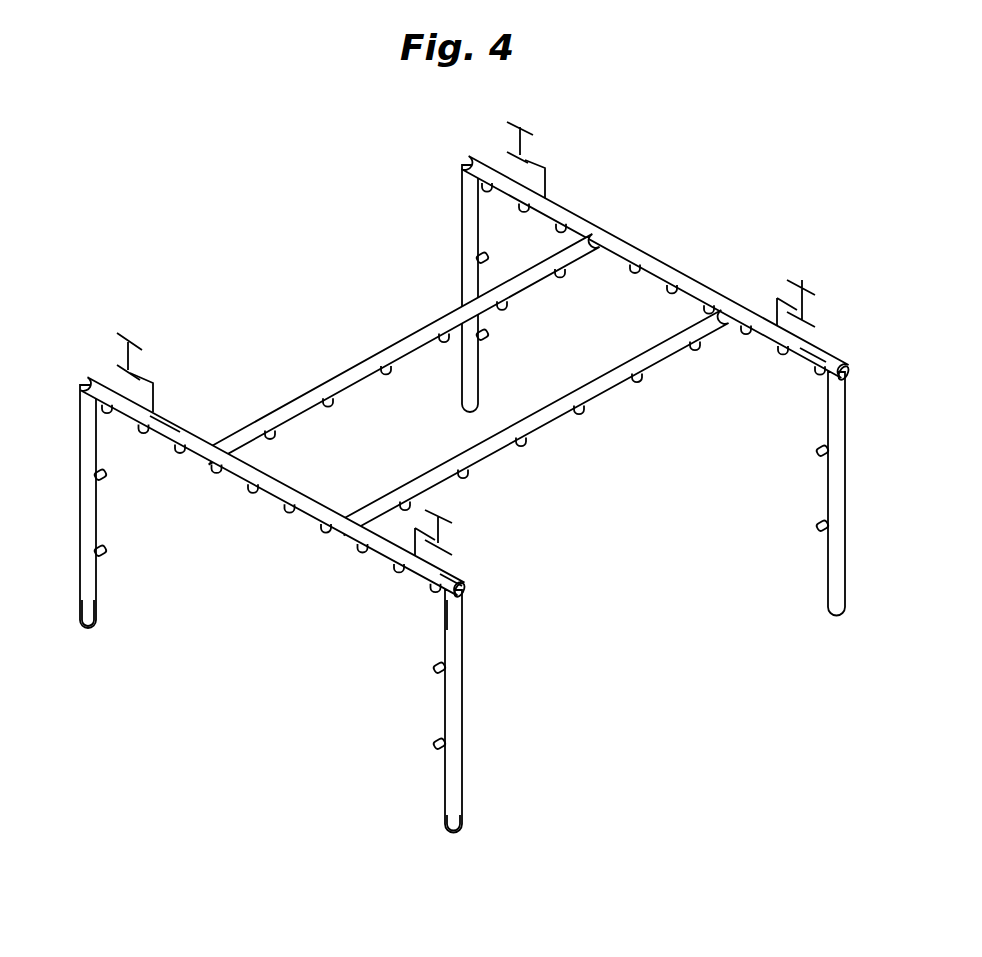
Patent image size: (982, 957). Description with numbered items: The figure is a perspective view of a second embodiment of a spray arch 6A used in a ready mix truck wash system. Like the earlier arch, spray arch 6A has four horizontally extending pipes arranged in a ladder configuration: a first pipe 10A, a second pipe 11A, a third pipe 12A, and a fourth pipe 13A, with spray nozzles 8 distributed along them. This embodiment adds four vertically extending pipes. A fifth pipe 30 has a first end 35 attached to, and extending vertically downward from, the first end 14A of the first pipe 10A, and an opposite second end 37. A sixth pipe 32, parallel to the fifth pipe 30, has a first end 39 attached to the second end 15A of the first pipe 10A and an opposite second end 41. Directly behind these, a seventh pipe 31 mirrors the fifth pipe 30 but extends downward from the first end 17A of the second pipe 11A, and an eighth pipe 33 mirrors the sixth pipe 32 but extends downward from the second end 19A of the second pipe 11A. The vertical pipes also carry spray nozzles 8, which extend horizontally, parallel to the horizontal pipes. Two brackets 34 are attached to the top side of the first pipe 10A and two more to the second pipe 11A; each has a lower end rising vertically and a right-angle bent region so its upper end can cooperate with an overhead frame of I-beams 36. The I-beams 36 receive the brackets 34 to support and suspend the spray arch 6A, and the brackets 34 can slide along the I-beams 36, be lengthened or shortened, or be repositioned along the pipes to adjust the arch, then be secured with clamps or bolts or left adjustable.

The spray arch 6A is at (248, 173).
The spray nozzles 8 is at (437, 742).
The first pipe 10A is at (275, 490).
The second pipe 11A is at (648, 250).
The third pipe 12A is at (592, 384).
The fourth pipe 13A is at (420, 332).
The first end of first pipe 14A is at (458, 578).
The second end of first pipe 15A is at (168, 428).
The first end of second pipe 17A is at (812, 352).
The second end of second pipe 19A is at (468, 158).
The fifth pipe 30 is at (452, 640).
The seventh pipe 31 is at (830, 495).
The sixth pipe 32 is at (93, 515).
The eighth pipe 33 is at (465, 260).
The brackets 34 is at (547, 183).
The first end of fifth pipe 35 is at (452, 610).
The I-beams 36 is at (508, 124).
The second end of fifth pipe 37 is at (457, 822).
The first end of sixth pipe 39 is at (90, 397).
The second end of sixth pipe 41 is at (92, 618).